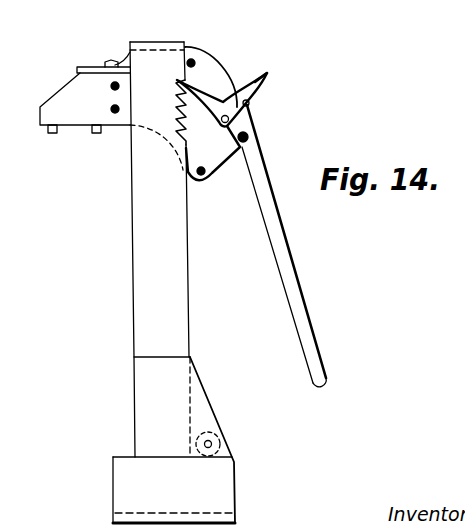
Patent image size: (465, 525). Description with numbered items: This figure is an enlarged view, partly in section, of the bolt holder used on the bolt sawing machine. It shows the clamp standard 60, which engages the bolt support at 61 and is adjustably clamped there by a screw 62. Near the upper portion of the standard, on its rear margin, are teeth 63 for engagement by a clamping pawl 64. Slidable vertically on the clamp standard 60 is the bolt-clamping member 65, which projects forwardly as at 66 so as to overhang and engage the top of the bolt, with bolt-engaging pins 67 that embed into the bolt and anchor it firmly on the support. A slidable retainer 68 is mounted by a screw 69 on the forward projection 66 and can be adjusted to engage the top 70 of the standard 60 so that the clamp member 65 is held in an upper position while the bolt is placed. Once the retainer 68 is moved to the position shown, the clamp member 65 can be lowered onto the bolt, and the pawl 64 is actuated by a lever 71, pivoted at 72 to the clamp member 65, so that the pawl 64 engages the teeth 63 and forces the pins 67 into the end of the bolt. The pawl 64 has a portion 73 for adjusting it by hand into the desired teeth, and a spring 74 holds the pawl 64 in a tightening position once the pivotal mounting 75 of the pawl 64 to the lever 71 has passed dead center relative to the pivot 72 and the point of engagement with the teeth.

The clamp standard 60 is at (140, 312).
The engagement with bolt support 61 is at (132, 493).
The screw 62 is at (210, 442).
The teeth 63 is at (179, 105).
The clamping pawl 64 is at (203, 98).
The bolt-clamping member 65 is at (203, 57).
The forwardly projecting portion 66 is at (50, 100).
The bolt-engaging pins 67 is at (92, 134).
The slidable retainer 68 is at (80, 66).
The screw 69 is at (108, 60).
The top of the standard 70 is at (160, 42).
The lever 71 is at (283, 236).
The pivot 72 is at (249, 137).
The hand-adjustment portion 73 is at (267, 73).
The spring 74 is at (249, 102).
The pivotal mounting 75 is at (225, 123).